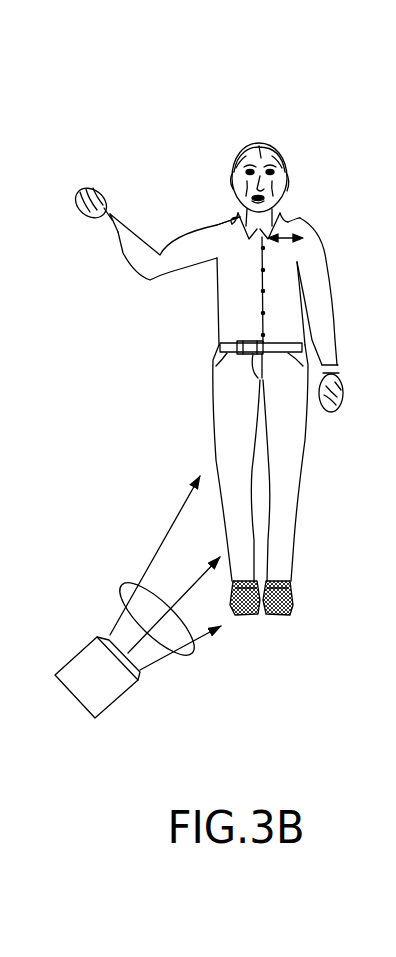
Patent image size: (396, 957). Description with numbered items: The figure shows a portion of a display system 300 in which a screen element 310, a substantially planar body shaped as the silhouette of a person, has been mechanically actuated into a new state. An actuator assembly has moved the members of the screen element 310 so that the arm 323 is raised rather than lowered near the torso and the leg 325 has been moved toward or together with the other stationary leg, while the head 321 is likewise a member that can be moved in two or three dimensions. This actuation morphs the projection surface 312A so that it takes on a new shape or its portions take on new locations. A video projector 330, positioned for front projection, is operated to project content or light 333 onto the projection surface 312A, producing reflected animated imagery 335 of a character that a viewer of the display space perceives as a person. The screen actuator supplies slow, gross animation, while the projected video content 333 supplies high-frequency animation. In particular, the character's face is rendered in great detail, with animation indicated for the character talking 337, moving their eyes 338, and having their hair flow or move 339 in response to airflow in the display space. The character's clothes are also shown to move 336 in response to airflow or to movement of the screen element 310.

The display system 300 is at (193, 117).
The screen element 310 is at (193, 208).
The projection surface 312A is at (229, 326).
The head 321 is at (287, 161).
The arm 323 is at (80, 216).
The leg 325 is at (298, 520).
The video projector 330 is at (120, 695).
The projected content/light 333 is at (183, 655).
The animated imagery 335 is at (178, 268).
The clothes movement 336 is at (290, 243).
The talking animation 337 is at (240, 188).
The eye movement animation 338 is at (281, 191).
The hair movement animation 339 is at (262, 146).